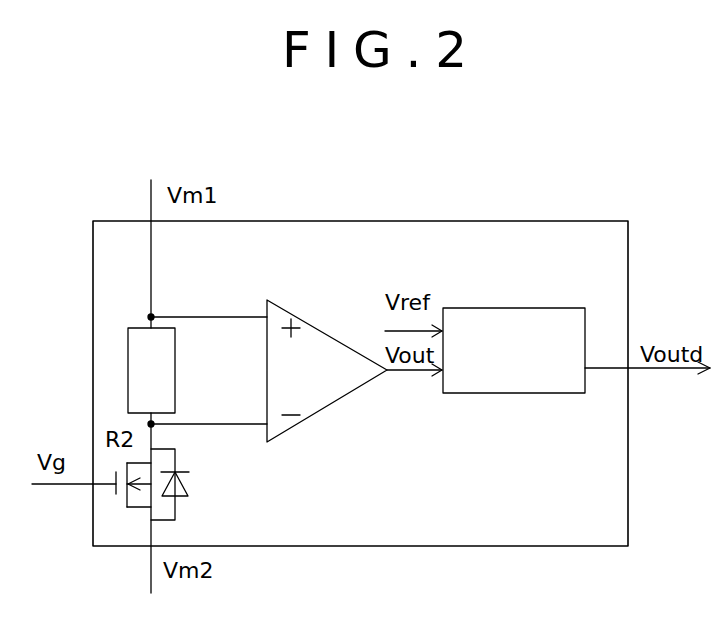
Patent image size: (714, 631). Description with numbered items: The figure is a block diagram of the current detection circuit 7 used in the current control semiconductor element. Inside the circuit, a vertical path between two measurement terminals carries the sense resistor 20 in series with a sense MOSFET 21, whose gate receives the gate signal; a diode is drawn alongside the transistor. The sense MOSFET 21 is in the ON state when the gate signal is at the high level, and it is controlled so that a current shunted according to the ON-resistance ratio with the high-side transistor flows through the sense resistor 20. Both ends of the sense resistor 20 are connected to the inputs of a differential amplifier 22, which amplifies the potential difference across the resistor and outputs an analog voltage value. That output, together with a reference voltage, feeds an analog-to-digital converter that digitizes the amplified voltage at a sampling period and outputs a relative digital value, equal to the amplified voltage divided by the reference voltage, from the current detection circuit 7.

The current detection circuit 7 is at (365, 220).
The sense resistor (Rsns) 20 is at (177, 372).
The sense MOSFET 21 is at (189, 513).
The differential amplifier 22 is at (307, 318).